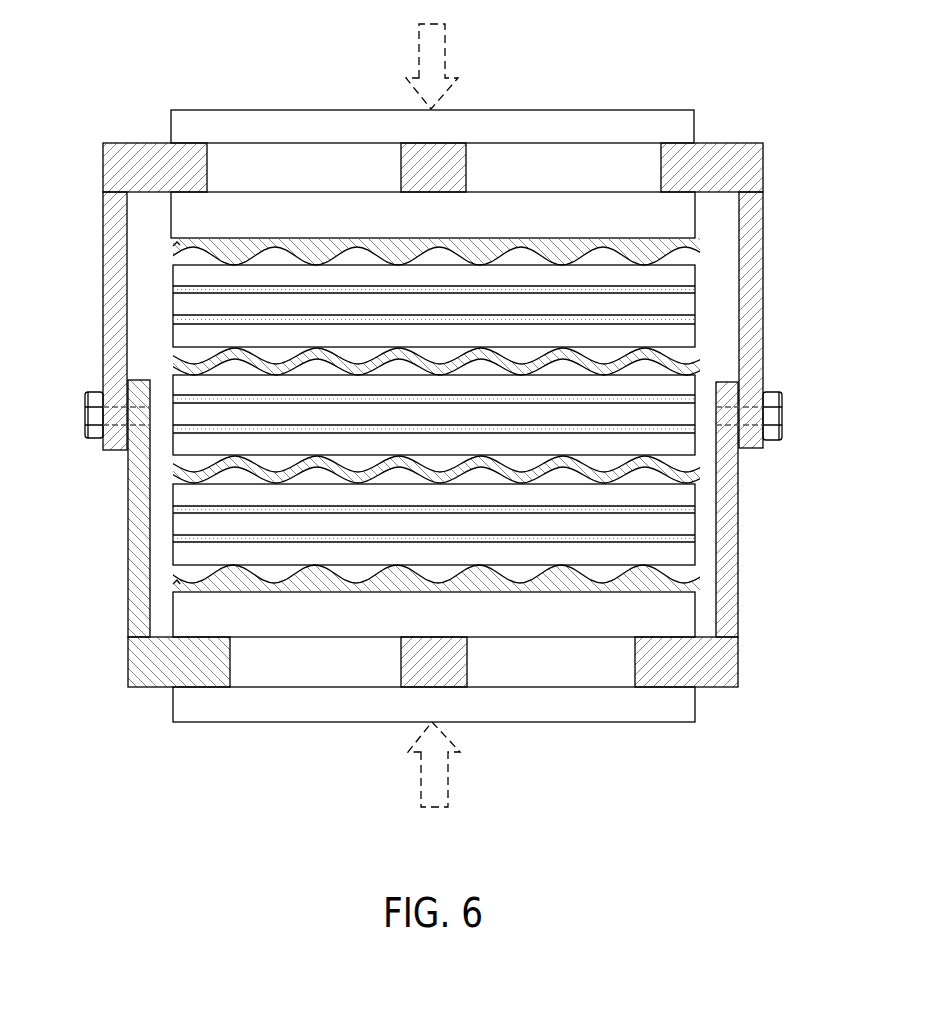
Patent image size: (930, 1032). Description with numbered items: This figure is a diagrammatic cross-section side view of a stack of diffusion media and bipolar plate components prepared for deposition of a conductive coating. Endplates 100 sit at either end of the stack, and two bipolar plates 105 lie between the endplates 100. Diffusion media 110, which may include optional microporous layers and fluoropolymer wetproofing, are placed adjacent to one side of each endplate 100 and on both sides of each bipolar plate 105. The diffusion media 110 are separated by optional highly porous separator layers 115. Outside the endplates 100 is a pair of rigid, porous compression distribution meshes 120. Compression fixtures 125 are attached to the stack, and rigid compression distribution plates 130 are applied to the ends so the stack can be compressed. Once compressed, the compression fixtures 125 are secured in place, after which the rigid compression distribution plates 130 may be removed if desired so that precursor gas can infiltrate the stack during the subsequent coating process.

The endplate 100 is at (174, 247).
The bipolar plate 105 is at (174, 362).
The diffusion media 110 is at (173, 335).
The highly porous separator layer 115 is at (686, 307).
The compression distribution mesh 120 is at (172, 210).
The compression fixture 125 is at (104, 151).
The rigid compression distribution plate 130 is at (177, 125).